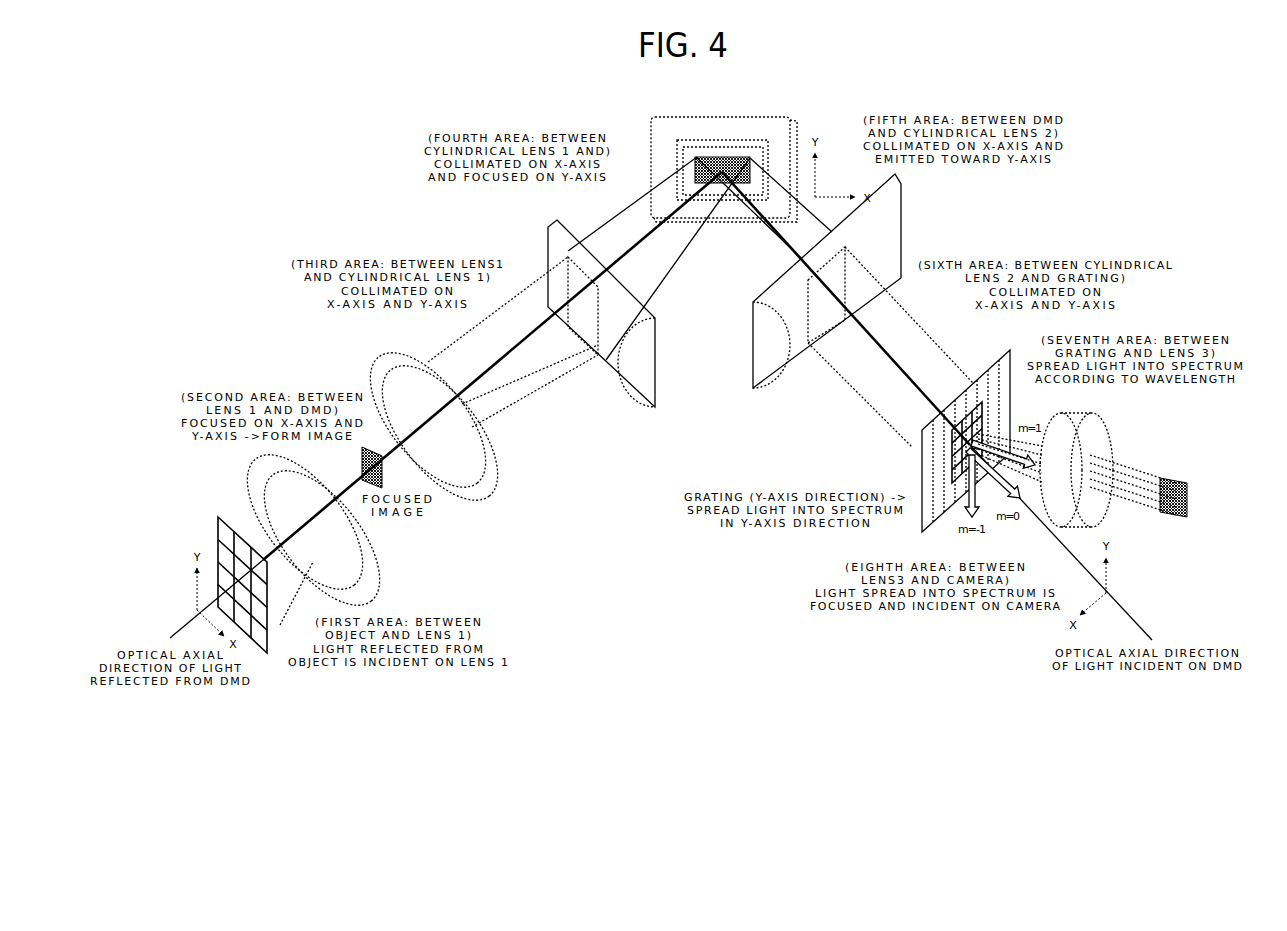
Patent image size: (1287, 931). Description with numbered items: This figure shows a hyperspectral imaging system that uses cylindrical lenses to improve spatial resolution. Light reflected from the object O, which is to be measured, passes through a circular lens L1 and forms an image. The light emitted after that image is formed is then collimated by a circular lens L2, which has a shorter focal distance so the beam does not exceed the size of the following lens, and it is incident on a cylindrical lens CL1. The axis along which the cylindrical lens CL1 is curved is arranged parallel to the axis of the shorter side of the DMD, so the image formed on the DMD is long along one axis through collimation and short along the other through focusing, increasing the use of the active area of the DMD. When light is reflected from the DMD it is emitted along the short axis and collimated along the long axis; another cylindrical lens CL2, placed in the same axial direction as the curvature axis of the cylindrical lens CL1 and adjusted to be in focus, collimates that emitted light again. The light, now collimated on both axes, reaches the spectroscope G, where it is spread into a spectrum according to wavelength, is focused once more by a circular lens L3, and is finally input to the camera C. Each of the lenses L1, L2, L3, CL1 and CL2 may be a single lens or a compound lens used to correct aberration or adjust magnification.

The element DMD is at (752, 117).
The cylindrical lens CL1 is at (548, 228).
The cylindrical lens CL2 is at (901, 237).
The circular lens L1 is at (262, 478).
The circular lens L2 is at (378, 376).
The circular lens L3 is at (1112, 442).
The object O is at (218, 522).
The spectroscope G is at (922, 478).
The camera C is at (1186, 484).